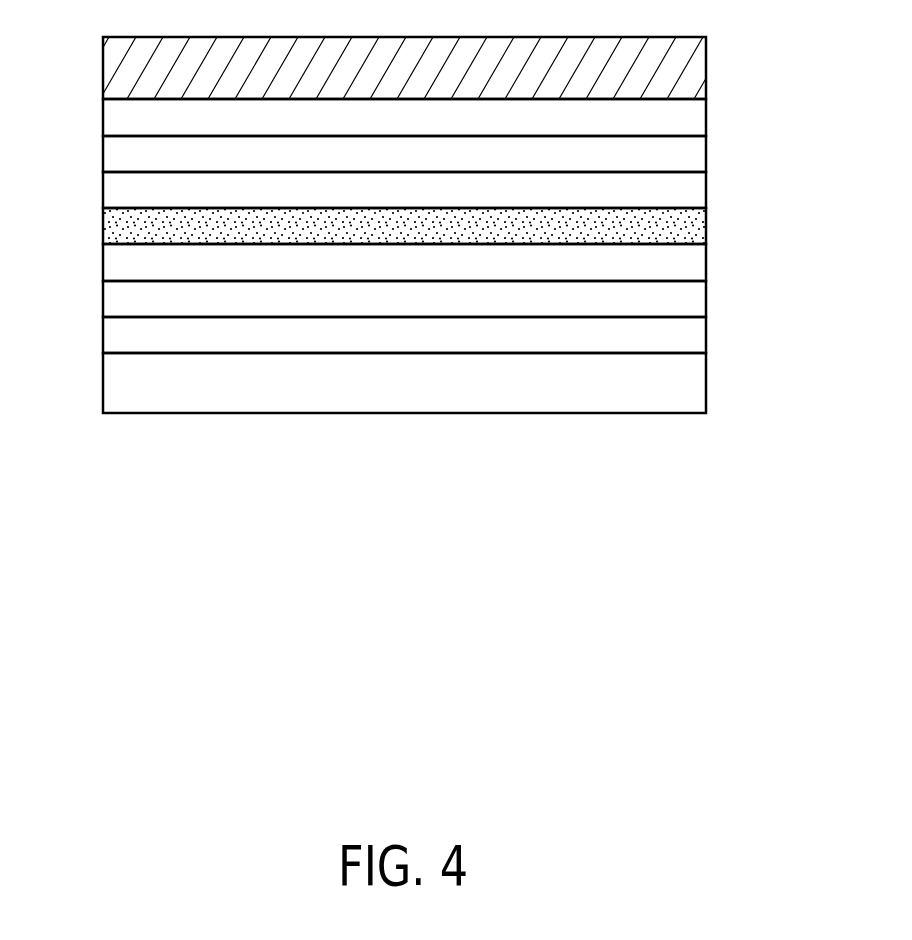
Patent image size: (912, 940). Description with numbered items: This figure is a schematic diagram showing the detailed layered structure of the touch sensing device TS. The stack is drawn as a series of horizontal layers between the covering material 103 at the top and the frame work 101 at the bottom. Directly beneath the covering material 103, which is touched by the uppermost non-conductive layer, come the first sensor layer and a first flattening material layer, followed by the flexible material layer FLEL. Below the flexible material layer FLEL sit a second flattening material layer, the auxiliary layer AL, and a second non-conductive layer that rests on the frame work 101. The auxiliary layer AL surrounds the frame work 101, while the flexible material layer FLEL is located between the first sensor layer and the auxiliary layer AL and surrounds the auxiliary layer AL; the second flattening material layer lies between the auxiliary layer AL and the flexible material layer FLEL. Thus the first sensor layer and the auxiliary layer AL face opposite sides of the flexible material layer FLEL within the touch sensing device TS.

The covering material 103 is at (697, 75).
The flexible material layer FLEL is at (697, 228).
The auxiliary layer AL is at (697, 300).
The frame work 101 is at (697, 385).
The touch sensing device TS is at (92, 100).